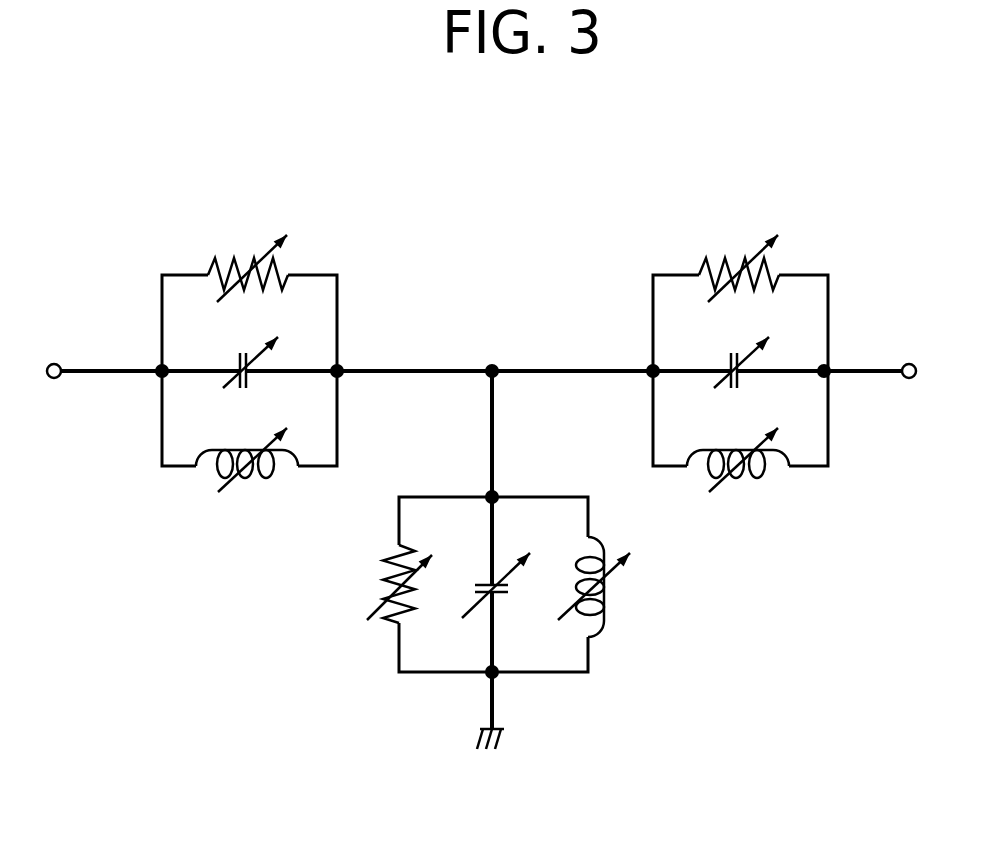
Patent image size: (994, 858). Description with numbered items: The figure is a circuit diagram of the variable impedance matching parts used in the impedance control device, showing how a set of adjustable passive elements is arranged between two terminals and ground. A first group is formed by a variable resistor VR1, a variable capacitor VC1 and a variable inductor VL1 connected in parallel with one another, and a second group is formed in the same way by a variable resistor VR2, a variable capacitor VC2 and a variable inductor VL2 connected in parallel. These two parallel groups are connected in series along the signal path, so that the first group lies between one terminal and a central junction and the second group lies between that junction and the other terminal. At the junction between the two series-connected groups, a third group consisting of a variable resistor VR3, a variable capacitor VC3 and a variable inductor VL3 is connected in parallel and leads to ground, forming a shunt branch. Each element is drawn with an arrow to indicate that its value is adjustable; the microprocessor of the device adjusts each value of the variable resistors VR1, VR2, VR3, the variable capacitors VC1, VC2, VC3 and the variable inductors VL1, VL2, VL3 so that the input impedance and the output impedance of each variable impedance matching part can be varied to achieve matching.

The variable resistor VR1 is at (248, 251).
The variable capacitor VC1 is at (242, 346).
The variable inductor VL1 is at (247, 479).
The variable resistor VR2 is at (373, 584).
The variable capacitor VC2 is at (512, 562).
The variable inductor VL2 is at (615, 587).
The variable resistor VR3 is at (739, 251).
The variable capacitor VC3 is at (733, 346).
The variable inductor VL3 is at (738, 479).